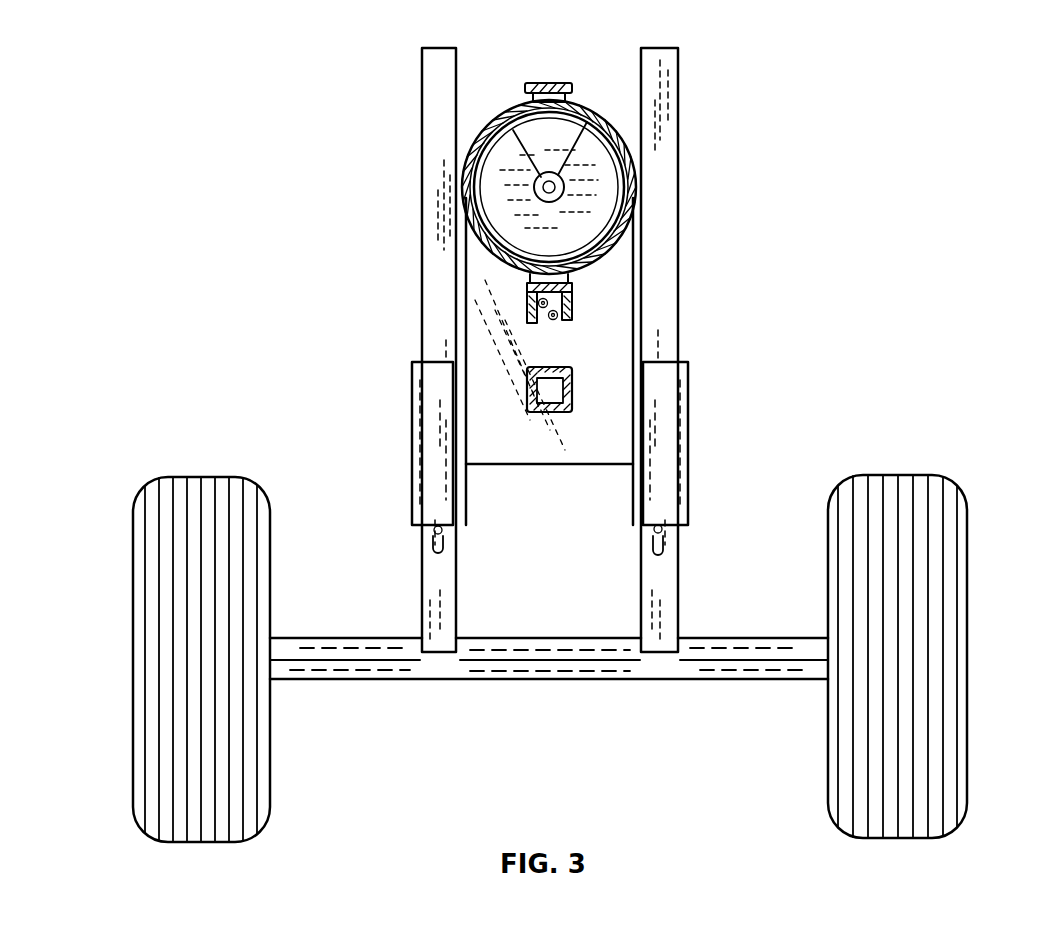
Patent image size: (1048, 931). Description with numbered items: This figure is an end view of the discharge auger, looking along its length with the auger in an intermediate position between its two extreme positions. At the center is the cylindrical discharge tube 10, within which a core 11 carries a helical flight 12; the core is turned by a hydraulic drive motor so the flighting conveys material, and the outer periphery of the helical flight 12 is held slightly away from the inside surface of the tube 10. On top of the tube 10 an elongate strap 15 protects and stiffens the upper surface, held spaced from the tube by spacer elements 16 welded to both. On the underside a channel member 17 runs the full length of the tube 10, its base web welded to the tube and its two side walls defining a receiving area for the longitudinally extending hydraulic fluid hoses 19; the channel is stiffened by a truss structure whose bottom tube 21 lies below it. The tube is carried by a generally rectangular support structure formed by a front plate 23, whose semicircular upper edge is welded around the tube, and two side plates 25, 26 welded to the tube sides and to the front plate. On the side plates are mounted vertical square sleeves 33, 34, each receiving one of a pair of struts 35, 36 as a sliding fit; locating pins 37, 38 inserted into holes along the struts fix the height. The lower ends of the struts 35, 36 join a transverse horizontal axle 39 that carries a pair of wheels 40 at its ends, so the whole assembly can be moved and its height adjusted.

The discharge tube 10 is at (627, 137).
The core 11 is at (587, 122).
The helical flight 12 is at (528, 236).
The elongate strap 15 is at (547, 82).
The spacer elements 16 is at (533, 98).
The channel member 17 is at (573, 293).
The hydraulic fluid hoses 19 is at (546, 324).
The bottom tube 21 is at (573, 388).
The front plate 23 is at (525, 442).
The side plate 25 is at (472, 495).
The side plate 26 is at (630, 495).
The vertical square sleeve 33 is at (410, 425).
The vertical square sleeve 34 is at (688, 408).
The strut 35 is at (432, 248).
The strut 36 is at (665, 260).
The locating pin 37 is at (420, 537).
The locating pin 38 is at (678, 527).
The transverse horizontal axle 39 is at (553, 679).
The wheels 40 is at (273, 745).